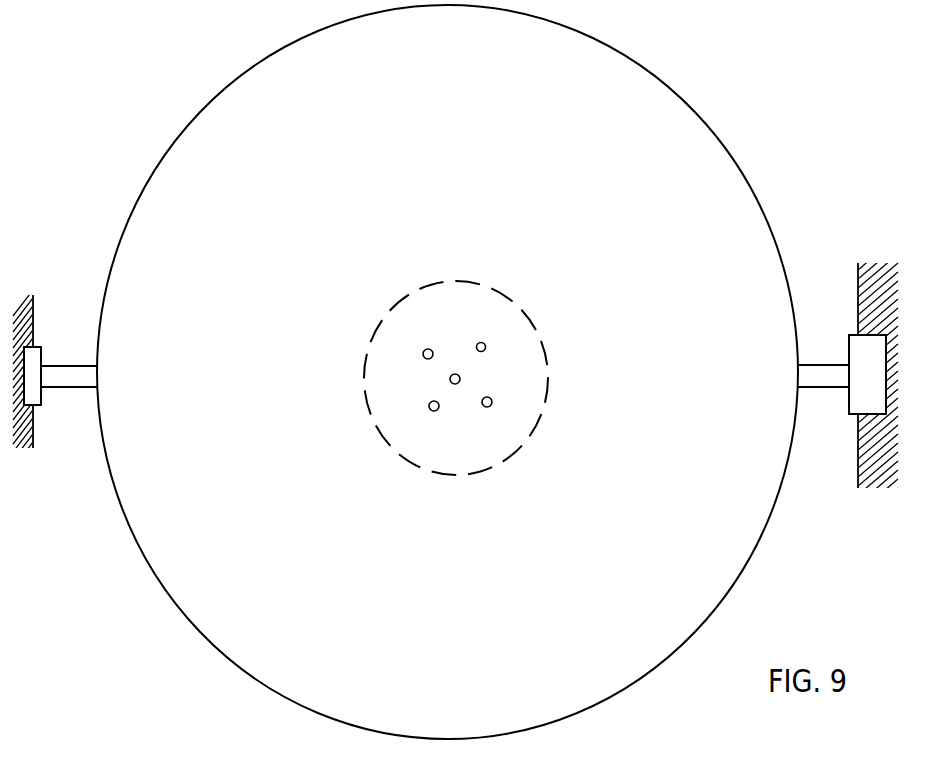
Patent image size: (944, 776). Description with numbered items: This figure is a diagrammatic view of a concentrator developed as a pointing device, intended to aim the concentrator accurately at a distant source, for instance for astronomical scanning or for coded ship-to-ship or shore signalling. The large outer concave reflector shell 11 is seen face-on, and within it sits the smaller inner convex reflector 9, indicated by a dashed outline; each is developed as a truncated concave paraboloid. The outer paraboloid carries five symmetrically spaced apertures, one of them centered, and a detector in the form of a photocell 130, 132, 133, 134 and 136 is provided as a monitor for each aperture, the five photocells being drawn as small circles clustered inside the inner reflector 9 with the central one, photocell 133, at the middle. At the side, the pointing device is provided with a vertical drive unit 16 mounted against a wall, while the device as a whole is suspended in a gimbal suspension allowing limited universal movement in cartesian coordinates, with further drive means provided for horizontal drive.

The inner convex reflector 9 is at (553, 376).
The outer concave reflector shell 11 is at (725, 148).
The vertical drive unit 16 is at (851, 404).
The photocell 130 is at (425, 349).
The photocell 132 is at (485, 343).
The photocell 133 is at (450, 380).
The photocell 134 is at (487, 407).
The photocell 136 is at (429, 407).